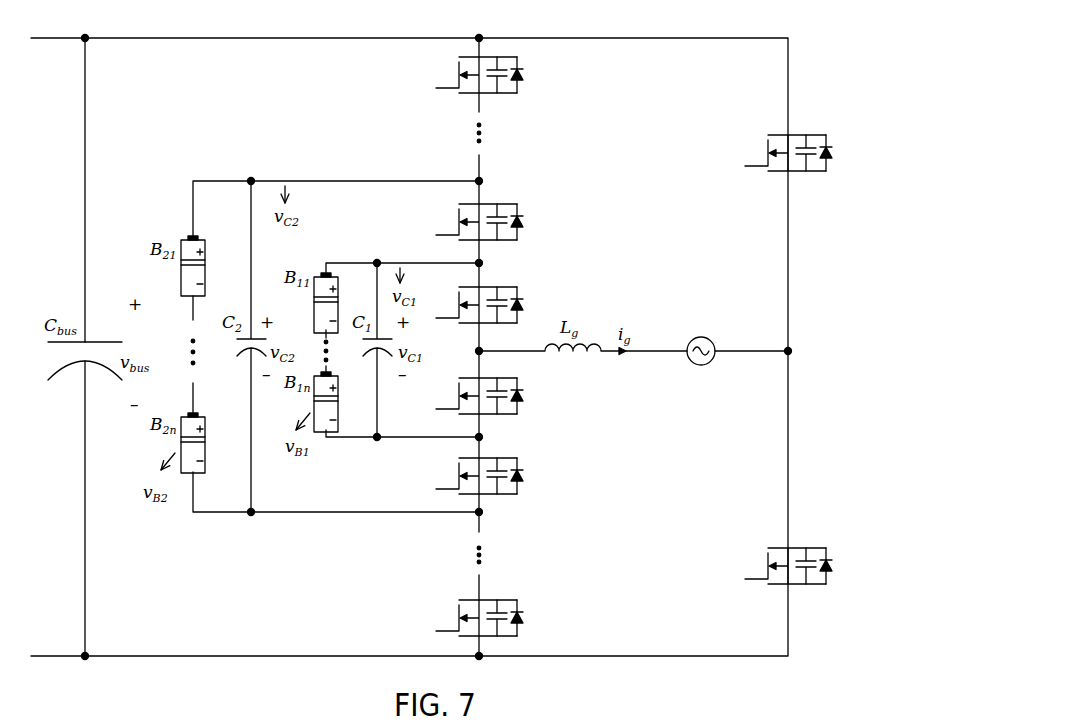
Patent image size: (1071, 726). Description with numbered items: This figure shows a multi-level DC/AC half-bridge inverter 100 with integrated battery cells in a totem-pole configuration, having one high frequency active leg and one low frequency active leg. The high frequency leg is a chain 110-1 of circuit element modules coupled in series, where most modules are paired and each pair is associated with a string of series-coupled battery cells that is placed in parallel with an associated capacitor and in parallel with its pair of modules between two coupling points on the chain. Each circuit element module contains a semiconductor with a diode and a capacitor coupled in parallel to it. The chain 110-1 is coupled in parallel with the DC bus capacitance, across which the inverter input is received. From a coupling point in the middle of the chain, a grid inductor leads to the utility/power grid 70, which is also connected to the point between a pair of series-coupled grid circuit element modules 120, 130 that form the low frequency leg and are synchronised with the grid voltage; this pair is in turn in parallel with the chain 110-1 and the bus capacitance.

The inverter 100 is at (830, 66).
The chain of circuit element modules 110-1 is at (552, 172).
The grid circuit element module 120 is at (816, 185).
The grid circuit element module 130 is at (810, 543).
The utility/power grid 70 is at (700, 333).